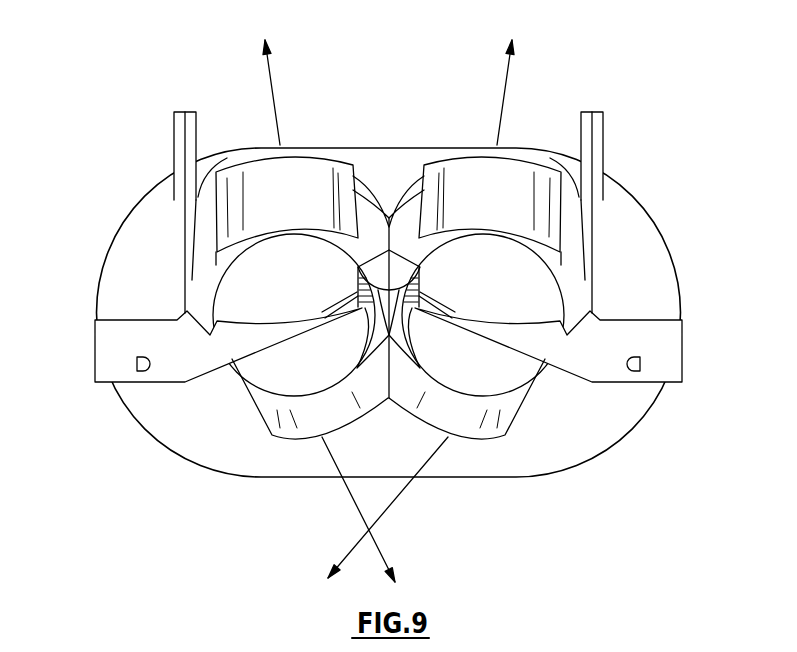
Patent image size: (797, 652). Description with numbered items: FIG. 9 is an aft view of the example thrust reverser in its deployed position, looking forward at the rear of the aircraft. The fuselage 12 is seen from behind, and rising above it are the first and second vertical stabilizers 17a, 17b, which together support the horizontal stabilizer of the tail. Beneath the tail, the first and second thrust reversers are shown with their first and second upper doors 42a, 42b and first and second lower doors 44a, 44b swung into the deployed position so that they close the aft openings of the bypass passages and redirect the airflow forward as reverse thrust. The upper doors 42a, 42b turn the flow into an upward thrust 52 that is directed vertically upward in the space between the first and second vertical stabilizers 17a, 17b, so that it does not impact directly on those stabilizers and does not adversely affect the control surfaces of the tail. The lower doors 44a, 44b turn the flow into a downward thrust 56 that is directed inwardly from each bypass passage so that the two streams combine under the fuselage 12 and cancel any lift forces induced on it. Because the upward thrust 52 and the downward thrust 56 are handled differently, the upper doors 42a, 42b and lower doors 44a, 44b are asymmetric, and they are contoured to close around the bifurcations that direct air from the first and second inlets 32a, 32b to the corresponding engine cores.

The fuselage 12 is at (667, 248).
The first vertical stabilizer 17a is at (175, 152).
The second vertical stabilizer 17b is at (603, 152).
The first inlet 32a is at (108, 318).
The second inlet 32b is at (669, 318).
The first upper door 42a is at (260, 283).
The second upper door 42b is at (517, 283).
The first lower door 44a is at (270, 372).
The second lower door 44b is at (507, 372).
The upward thrust 52 is at (273, 83).
The downward thrust 56 is at (388, 508).